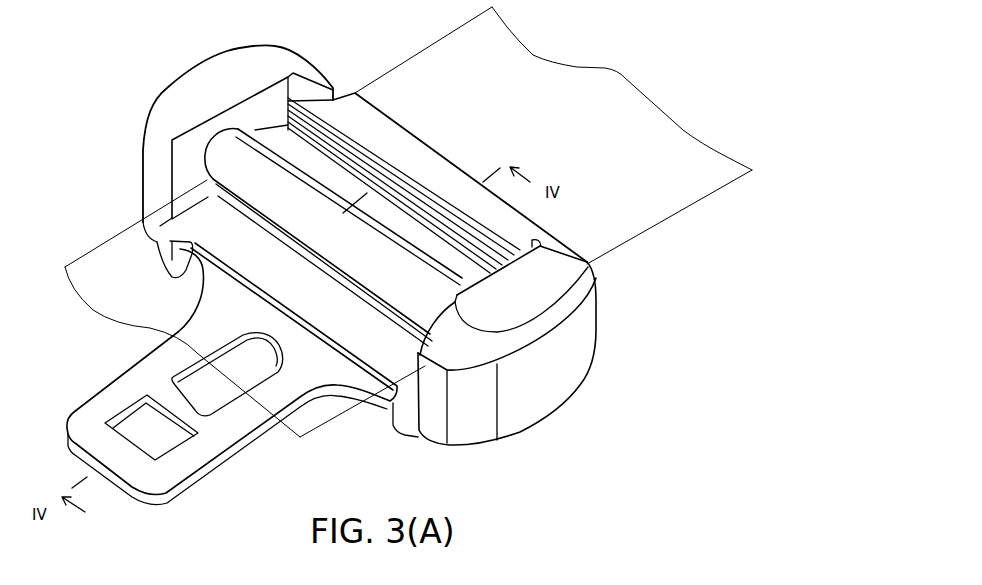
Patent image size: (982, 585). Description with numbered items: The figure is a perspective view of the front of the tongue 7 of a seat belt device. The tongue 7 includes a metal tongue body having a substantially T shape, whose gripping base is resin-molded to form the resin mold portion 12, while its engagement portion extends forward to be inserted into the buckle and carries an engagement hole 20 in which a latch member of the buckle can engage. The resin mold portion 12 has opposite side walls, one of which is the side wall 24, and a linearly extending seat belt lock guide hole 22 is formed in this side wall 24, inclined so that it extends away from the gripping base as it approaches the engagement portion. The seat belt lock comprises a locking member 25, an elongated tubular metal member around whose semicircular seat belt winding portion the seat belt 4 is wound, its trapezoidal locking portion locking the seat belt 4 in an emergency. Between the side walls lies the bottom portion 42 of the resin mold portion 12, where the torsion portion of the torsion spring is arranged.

The tongue 7 is at (110, 91).
The side wall 24 is at (242, 112).
The seat belt lock guide hole 22 is at (270, 130).
The locking member 25 is at (345, 218).
The resin mold portion 12 is at (559, 388).
The engagement hole 20 is at (132, 437).
The bottom portion 42 is at (215, 247).
The seat belt 4 is at (684, 213).